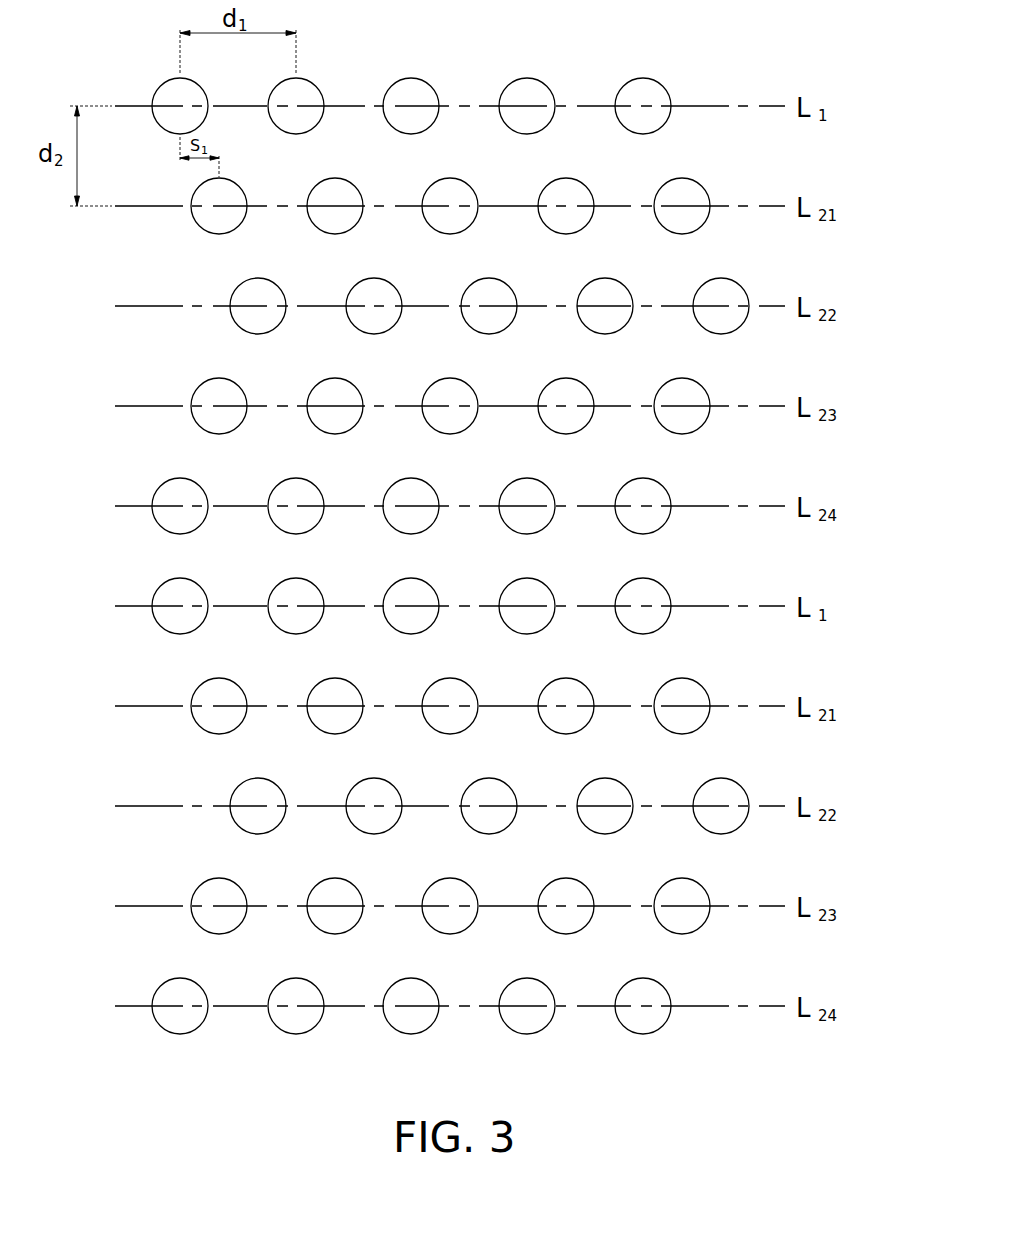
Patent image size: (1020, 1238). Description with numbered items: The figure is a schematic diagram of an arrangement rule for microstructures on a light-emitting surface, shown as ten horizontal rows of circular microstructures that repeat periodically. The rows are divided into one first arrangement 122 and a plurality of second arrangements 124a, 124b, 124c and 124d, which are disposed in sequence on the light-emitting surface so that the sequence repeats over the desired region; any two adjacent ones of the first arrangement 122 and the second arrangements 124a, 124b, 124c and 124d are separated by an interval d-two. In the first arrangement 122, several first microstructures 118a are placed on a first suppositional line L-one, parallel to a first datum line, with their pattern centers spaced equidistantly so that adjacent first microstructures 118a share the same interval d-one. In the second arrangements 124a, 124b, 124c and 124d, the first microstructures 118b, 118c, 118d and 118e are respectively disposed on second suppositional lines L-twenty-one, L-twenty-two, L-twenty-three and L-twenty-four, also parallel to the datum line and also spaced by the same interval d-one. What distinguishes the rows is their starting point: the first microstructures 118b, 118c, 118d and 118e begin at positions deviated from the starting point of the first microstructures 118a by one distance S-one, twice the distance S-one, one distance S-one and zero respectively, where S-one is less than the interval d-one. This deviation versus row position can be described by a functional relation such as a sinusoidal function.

The first microstructures of the first arrangement 118a is at (380, 97).
The first microstructures of the second arrangement 124a 118b is at (483, 197).
The first microstructures of the second arrangement 124b 118c is at (458, 297).
The first microstructures of the second arrangement 124c 118d is at (483, 397).
The first microstructures of the second arrangement 124d 118e is at (380, 497).
The first arrangement 122 is at (506, 321).
The second arrangement 124a is at (512, 421).
The second arrangement 124b is at (512, 521).
The second arrangement 124c is at (512, 621).
The second arrangement 124d is at (512, 721).